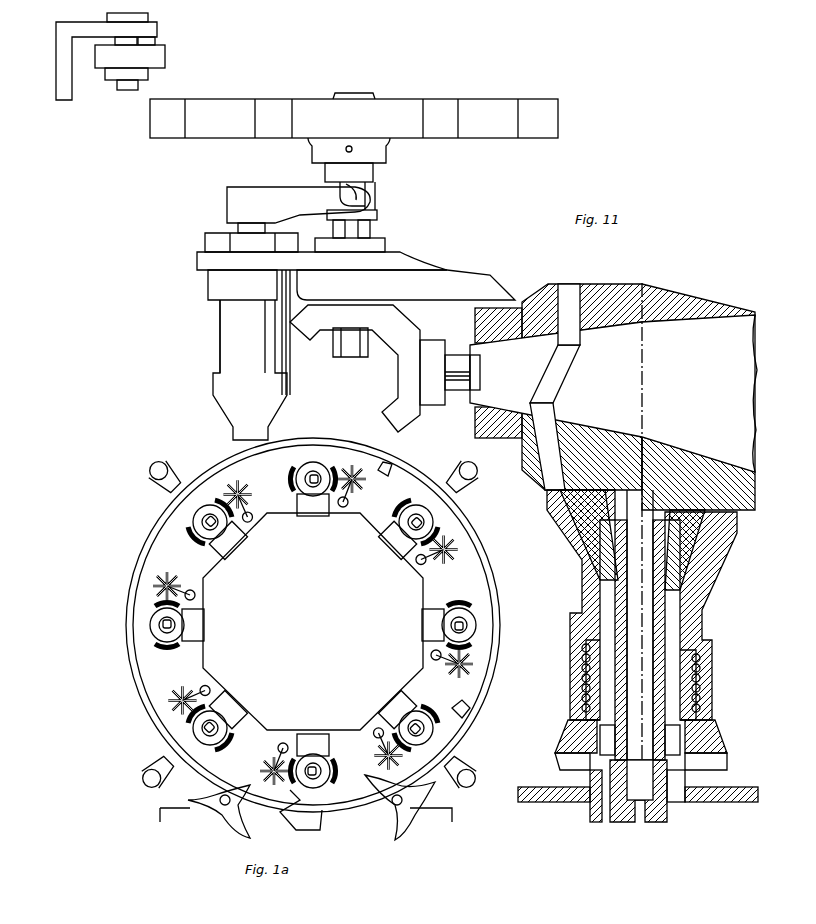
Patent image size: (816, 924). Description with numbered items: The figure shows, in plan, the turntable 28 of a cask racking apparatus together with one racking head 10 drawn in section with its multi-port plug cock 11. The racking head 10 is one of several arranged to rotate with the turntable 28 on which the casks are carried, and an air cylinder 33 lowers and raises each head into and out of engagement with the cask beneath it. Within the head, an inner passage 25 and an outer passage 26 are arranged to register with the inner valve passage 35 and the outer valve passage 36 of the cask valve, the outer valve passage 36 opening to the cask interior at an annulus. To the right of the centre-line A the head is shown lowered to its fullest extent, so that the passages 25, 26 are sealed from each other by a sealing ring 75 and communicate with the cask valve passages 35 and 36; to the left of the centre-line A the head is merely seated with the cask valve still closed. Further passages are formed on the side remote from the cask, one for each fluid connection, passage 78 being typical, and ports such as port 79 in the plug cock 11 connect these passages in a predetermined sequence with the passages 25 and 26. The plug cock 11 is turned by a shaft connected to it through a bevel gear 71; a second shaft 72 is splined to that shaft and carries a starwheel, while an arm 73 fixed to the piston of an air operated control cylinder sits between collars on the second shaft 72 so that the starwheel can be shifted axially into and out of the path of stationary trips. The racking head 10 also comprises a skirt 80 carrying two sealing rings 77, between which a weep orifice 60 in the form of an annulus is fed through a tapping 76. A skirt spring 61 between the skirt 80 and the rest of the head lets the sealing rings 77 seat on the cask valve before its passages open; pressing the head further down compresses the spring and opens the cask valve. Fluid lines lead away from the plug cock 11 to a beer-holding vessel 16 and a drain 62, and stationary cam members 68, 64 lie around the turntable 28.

In FIG. 1A, the beer-holding vessel 16 is at (370, 214).
In FIG. 1A, the second shaft 72 is at (352, 238).
In FIG. 1A, the arm 73 is at (345, 200).
In FIG. 1A, the bevel gear 71 is at (392, 322).
In FIG. 1A, the turntable 28 is at (166, 518).
In FIG. 1A, the air cylinder 33 is at (418, 712).
In FIG. 1A, the skirt spring 61 is at (296, 802).
In FIG. 11, the skirt spring 61 is at (584, 655).
In FIG. 1A, the drain 62 is at (352, 800).
In FIG. 1A, the cam lobe 68 is at (385, 783).
In FIG. 1A, the cam track 64 is at (425, 815).
In FIG. 11, the plug cock 11 is at (613, 393).
In FIG. 11, the port 79 is at (566, 370).
In FIG. 11, the passage 78 is at (567, 303).
In FIG. 11, the centre-line A is at (639, 560).
In FIG. 11, the racking head 10 is at (555, 547).
In FIG. 11, the inner passage 25 is at (650, 597).
In FIG. 11, the skirt 80 is at (704, 691).
In FIG. 11, the sealing rings 77 is at (556, 762).
In FIG. 11, the weep orifice 60 is at (718, 755).
In FIG. 11, the outer passage 26 is at (700, 728).
In FIG. 11, the tapping 76 is at (706, 743).
In FIG. 11, the sealing ring 75 is at (596, 804).
In FIG. 11, the inner valve passage 35 is at (688, 816).
In FIG. 11, the outer valve passage 36 is at (686, 806).